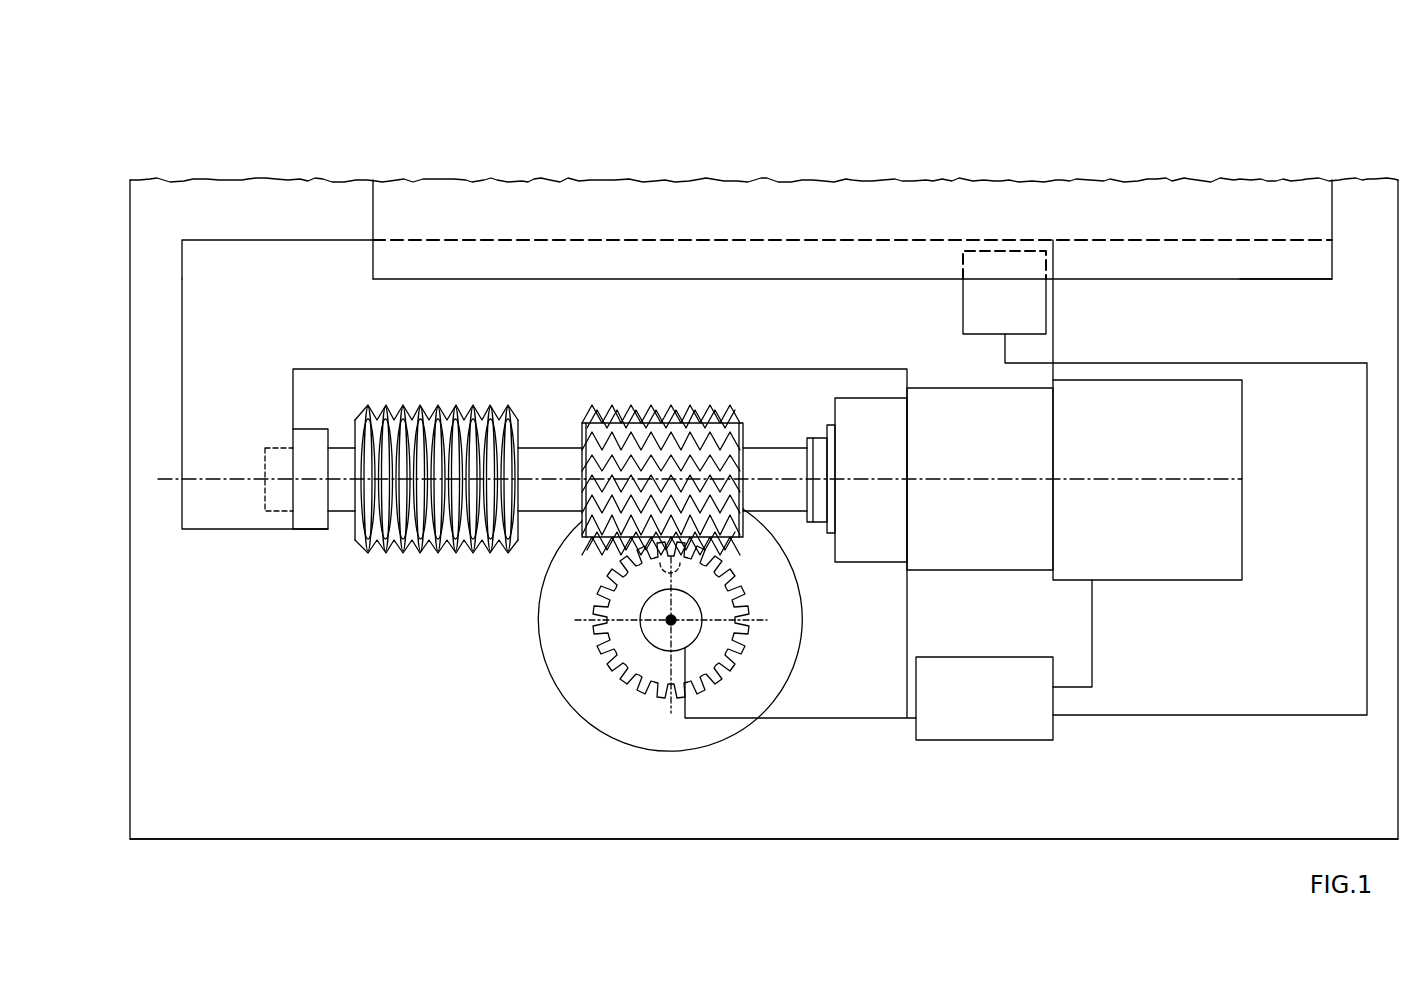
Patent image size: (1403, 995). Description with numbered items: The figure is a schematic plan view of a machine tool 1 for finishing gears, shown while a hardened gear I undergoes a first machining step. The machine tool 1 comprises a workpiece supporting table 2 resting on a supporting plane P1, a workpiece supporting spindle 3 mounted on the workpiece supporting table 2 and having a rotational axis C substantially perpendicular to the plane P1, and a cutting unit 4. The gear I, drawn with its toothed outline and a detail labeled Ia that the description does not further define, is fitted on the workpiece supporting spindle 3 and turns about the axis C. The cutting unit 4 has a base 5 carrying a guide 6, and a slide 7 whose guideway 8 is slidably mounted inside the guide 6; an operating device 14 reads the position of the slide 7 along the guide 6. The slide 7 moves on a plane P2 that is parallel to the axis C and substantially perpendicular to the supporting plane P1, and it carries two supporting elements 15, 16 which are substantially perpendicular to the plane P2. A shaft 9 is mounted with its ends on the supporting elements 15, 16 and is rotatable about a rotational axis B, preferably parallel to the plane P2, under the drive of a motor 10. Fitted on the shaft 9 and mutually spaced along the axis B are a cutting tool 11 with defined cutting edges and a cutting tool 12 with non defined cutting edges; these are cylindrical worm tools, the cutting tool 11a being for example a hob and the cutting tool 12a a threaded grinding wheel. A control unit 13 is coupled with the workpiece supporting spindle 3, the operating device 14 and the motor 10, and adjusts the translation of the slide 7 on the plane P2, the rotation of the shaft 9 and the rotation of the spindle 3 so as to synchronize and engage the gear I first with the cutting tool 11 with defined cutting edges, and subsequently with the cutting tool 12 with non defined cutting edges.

The machine tool 1 is at (1215, 165).
The workpiece supporting table 2 is at (556, 653).
The workpiece supporting spindle 3 is at (657, 635).
The cutting unit 4 is at (340, 572).
The base 5 is at (648, 217).
The guide 6 is at (1162, 248).
The slide 7 is at (238, 324).
The guideway 8 is at (212, 253).
The shaft 9 is at (343, 505).
The motor 10 is at (1150, 570).
The cutting tool with defined cutting edges 11 is at (707, 438).
The cutting tool with defined cutting edges 11a is at (717, 417).
The cutting tool with non defined cutting edges 12 is at (477, 437).
The cutting tool with non defined cutting edges 12a is at (442, 417).
The control unit 13 is at (953, 735).
The operating device 14 is at (1033, 307).
The supporting element 15 is at (210, 416).
The supporting element 16 is at (977, 560).
The rotational axis B is at (205, 482).
The rotational axis C is at (662, 608).
The gear I is at (727, 648).
The meshing region Ia is at (677, 563).
The supporting plane P1 is at (1140, 803).
The plane P2 is at (1263, 282).